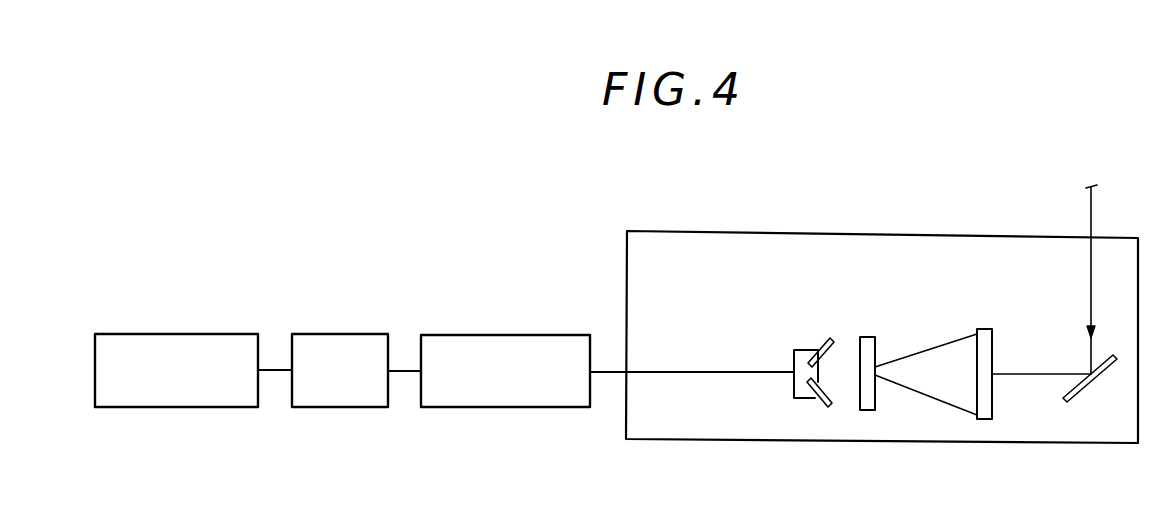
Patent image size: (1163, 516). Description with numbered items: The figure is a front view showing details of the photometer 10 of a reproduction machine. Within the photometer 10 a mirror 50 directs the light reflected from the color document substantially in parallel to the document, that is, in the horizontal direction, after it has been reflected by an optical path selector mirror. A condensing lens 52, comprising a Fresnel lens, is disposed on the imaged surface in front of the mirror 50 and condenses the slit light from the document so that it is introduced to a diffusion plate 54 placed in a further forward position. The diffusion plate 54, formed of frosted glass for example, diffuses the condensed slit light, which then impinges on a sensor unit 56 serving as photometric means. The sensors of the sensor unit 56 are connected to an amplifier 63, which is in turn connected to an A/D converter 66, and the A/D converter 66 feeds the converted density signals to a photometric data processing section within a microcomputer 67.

The photometer 10 is at (845, 222).
The mirror 50 is at (1085, 401).
The condensing lens 52 is at (985, 418).
The diffusion plate 54 is at (868, 345).
The sensor unit 56 is at (808, 326).
The amplifier 63 is at (499, 408).
The A/D converter 66 is at (342, 407).
The microcomputer 67 is at (188, 407).